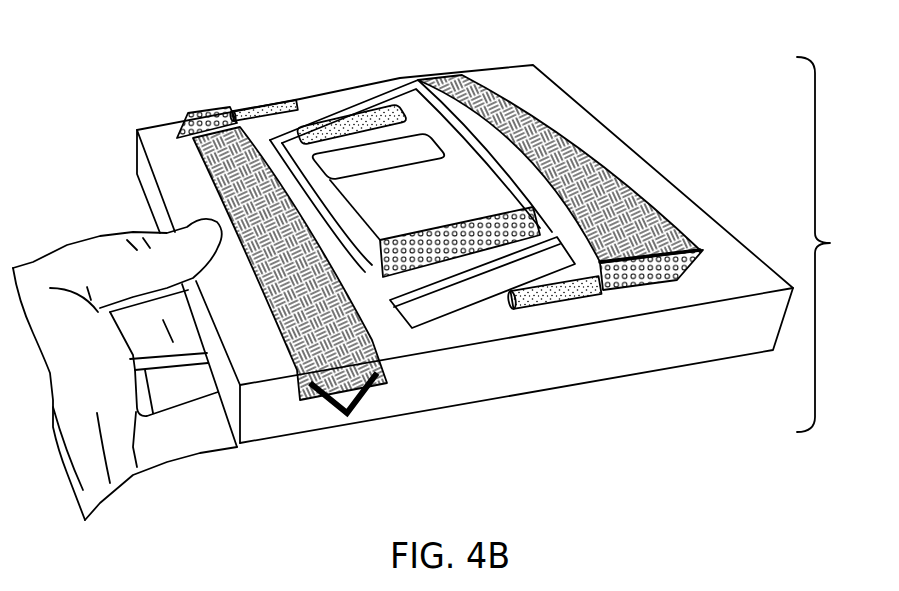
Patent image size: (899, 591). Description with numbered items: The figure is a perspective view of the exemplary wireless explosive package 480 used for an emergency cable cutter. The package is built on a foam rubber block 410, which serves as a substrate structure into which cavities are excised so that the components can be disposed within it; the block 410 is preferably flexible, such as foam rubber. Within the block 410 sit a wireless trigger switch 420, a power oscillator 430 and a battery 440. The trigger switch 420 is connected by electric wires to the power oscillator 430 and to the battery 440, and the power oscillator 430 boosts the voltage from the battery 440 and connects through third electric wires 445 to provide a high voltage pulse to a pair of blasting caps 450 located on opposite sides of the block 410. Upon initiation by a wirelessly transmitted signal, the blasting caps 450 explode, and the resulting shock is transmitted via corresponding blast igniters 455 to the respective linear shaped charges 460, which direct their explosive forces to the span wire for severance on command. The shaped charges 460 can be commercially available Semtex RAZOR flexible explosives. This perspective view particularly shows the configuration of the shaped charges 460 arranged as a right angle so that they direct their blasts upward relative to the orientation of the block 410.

The foam rubber block 410 is at (760, 353).
The wireless trigger switch 420 is at (363, 113).
The power oscillator 430 is at (455, 263).
The battery 440 is at (438, 162).
The third electric wires 445 is at (442, 320).
The blasting caps 450 is at (267, 107).
The blast igniters 455 is at (213, 110).
The linear shaped charges 460 is at (603, 180).
The wireless explosive package 480 is at (832, 244).